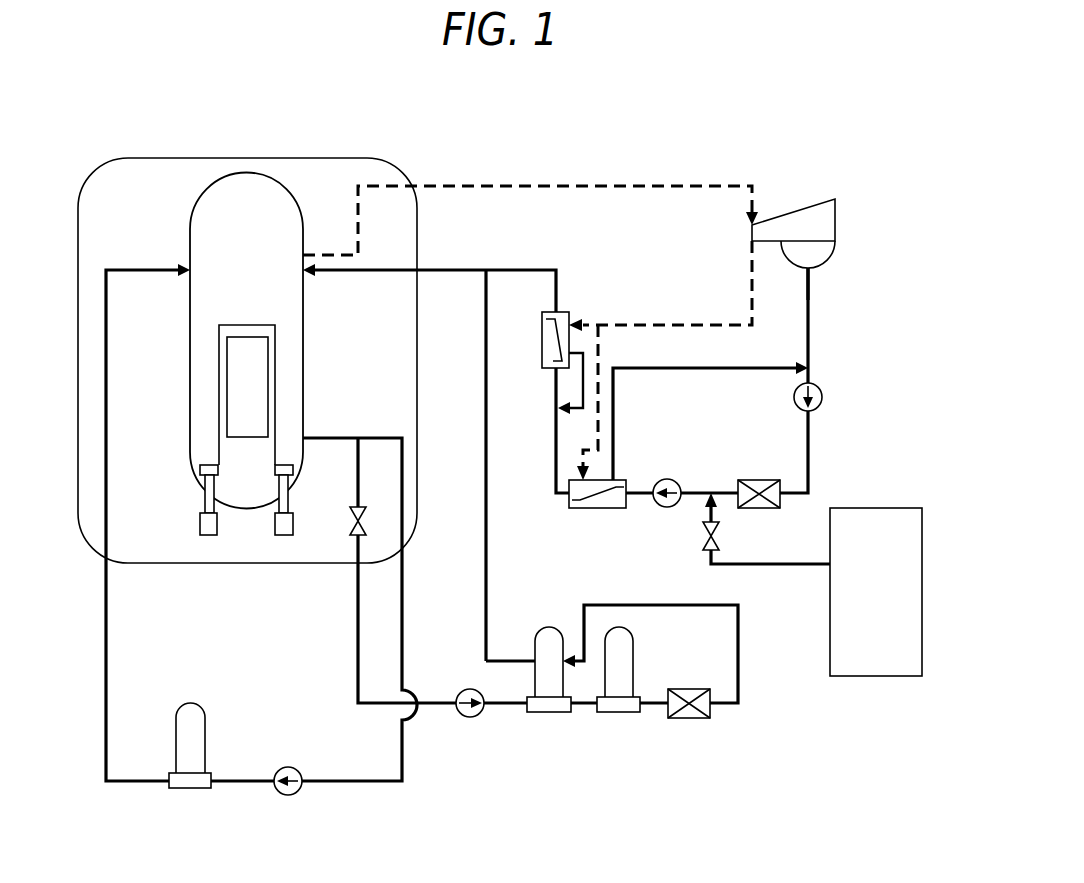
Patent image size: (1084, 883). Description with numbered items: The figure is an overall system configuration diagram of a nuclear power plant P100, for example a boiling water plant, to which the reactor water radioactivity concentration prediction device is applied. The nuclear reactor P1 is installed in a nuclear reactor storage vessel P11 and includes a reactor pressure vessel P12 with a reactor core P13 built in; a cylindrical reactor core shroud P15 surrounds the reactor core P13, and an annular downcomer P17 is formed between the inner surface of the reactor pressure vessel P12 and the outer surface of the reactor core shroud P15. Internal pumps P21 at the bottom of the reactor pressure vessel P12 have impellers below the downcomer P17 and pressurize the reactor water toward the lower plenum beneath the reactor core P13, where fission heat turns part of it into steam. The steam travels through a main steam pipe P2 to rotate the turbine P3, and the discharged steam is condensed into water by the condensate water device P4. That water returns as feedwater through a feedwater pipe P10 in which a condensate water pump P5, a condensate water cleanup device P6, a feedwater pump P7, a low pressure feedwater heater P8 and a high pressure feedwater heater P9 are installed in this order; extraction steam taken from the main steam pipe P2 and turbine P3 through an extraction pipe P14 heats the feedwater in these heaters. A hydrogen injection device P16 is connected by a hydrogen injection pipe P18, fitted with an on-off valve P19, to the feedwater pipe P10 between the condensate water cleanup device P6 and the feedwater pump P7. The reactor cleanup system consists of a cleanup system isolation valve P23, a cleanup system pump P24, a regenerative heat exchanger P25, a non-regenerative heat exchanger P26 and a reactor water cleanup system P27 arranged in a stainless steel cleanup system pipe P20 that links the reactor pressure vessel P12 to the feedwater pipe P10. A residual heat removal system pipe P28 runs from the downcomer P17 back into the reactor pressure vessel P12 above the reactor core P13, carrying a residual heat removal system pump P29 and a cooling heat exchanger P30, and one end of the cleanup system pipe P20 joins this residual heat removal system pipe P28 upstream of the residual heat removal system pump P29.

The nuclear power plant P100 is at (443, 127).
The nuclear reactor P1 is at (208, 386).
The main steam pipe P2 is at (628, 184).
The turbine P3 is at (777, 222).
The condensate water device P4 is at (828, 266).
The condensate water pump P5 is at (793, 395).
The condensate water cleanup device P6 is at (752, 509).
The feedwater pump P7 is at (666, 478).
The low pressure feedwater heater P8 is at (592, 509).
The high pressure feedwater heater P9 is at (542, 356).
The feedwater pipe P10 is at (455, 268).
The nuclear reactor storage vessel P11 is at (174, 157).
The reactor pressure vessel P12 is at (205, 190).
The reactor core P13 is at (260, 362).
The extraction pipe P14 is at (750, 284).
The reactor core shroud P15 is at (276, 402).
The hydrogen injection device P16 is at (865, 677).
The downcomer P17 is at (203, 448).
The hydrogen injection pipe P18 is at (781, 566).
The on-off valve P19 is at (705, 534).
The cleanup system pipe P20 is at (357, 642).
The internal pumps P21 is at (200, 502).
The cleanup system isolation valve P23 is at (354, 518).
The cleanup system pump P24 is at (471, 719).
The regenerative heat exchanger P25 is at (552, 713).
The non-regenerative heat exchanger P26 is at (620, 713).
The reactor water cleanup system P27 is at (688, 719).
The residual heat removal system pipe P28 is at (376, 785).
The residual heat removal system pump P29 is at (289, 797).
The heat exchanger (cooling device) P30 is at (191, 790).